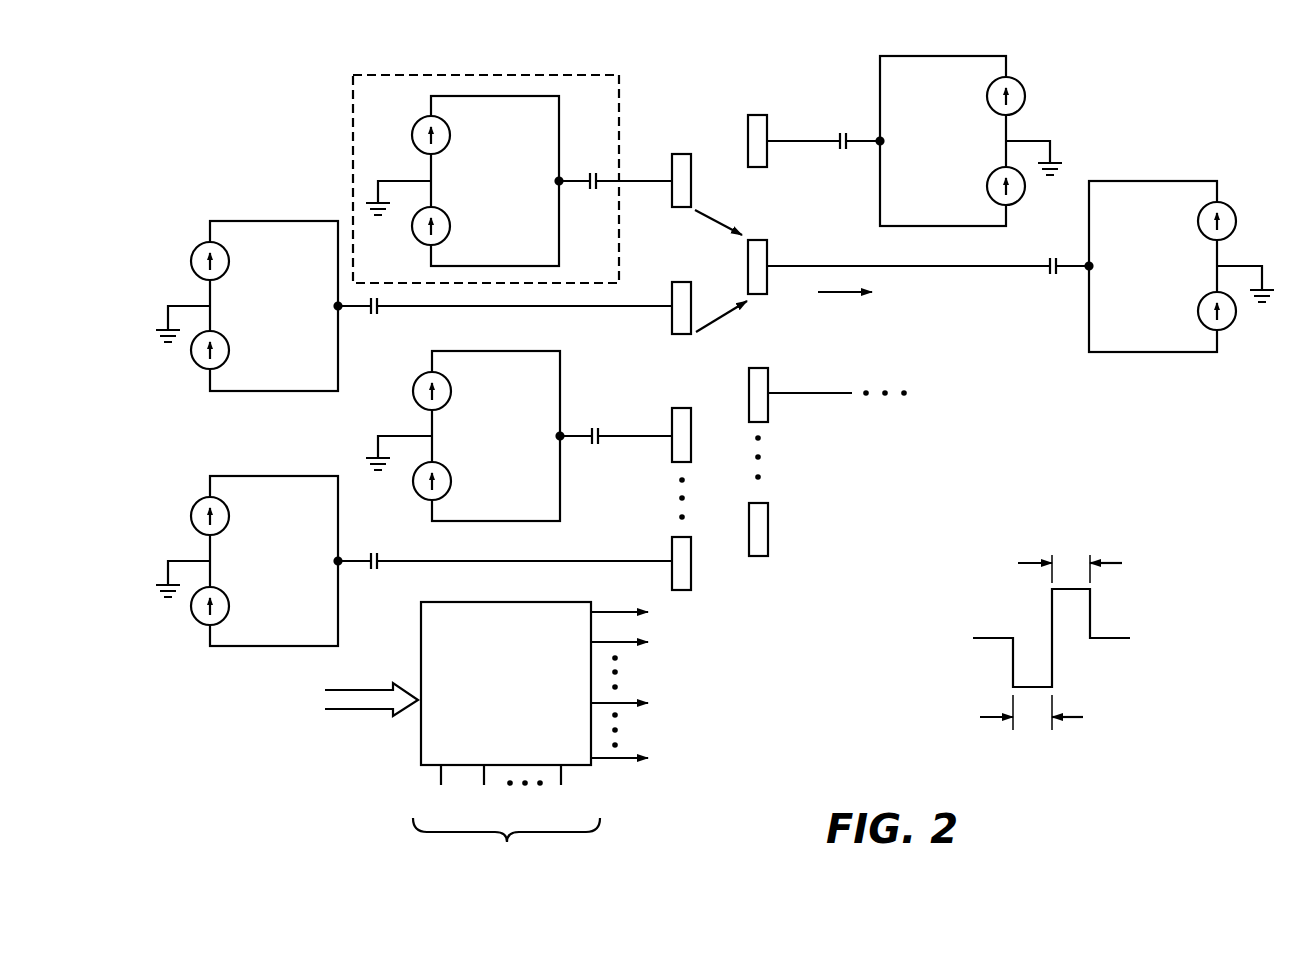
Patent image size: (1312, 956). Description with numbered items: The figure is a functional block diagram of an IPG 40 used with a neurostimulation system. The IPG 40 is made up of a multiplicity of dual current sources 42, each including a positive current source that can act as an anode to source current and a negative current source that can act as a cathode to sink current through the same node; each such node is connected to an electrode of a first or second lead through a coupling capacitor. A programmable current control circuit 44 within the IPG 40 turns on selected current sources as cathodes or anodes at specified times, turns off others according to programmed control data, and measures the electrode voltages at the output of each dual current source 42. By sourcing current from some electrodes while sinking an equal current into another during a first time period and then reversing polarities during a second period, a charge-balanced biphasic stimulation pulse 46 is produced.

The IPG 40 is at (260, 152).
The dual current source 42 is at (618, 118).
The programmable current control circuit 44 is at (421, 730).
The biphasic stimulation pulse 46 is at (1150, 600).